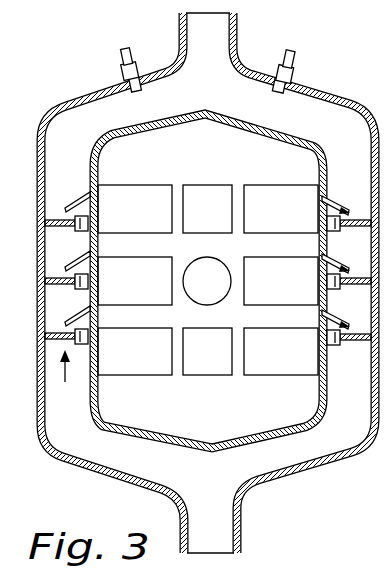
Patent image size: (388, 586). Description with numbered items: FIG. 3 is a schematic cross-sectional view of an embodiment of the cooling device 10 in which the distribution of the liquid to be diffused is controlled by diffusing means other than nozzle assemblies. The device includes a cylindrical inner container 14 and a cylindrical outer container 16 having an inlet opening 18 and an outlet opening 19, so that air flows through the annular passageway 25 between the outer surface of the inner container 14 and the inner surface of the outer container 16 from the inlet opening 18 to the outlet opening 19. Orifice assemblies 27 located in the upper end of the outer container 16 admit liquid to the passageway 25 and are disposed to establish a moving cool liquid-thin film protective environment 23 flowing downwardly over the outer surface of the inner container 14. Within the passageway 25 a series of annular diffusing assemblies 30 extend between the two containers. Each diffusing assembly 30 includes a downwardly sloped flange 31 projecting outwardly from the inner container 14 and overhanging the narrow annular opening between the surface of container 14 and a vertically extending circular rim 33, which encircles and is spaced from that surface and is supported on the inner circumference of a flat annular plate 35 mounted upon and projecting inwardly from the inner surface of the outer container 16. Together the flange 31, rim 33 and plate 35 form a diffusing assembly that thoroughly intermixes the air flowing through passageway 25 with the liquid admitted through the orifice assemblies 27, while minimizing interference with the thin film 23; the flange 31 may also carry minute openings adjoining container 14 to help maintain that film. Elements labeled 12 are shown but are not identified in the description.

The cooling device 10 is at (62, 85).
The catalyst / heat storage elements 12 is at (125, 217).
The inner container 14 is at (208, 279).
The outer container 16 is at (338, 93).
The inlet opening 18 is at (220, 539).
The outlet opening 19 is at (215, 34).
The cool liquid-thin film protective environment 23 is at (176, 116).
The annular passageway 25 is at (74, 187).
The orifice assemblies 27 is at (120, 72).
The annular diffusing assemblies 30 is at (64, 377).
The downwardly sloped flange 31 is at (334, 206).
The vertically extending circular rim 33 is at (352, 327).
The flat annular plate 35 is at (351, 270).